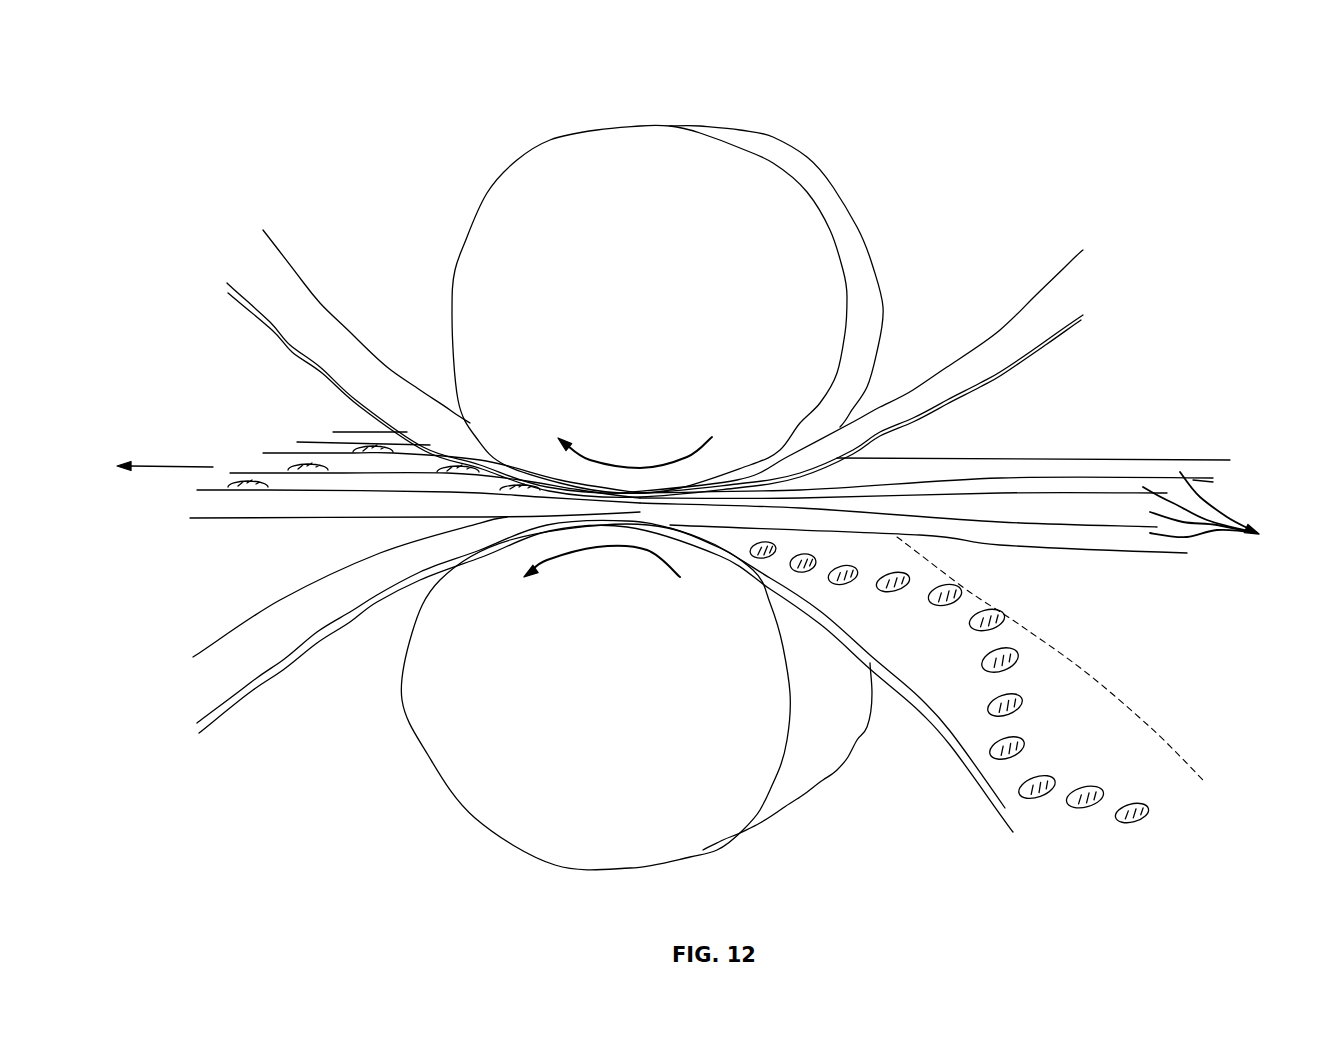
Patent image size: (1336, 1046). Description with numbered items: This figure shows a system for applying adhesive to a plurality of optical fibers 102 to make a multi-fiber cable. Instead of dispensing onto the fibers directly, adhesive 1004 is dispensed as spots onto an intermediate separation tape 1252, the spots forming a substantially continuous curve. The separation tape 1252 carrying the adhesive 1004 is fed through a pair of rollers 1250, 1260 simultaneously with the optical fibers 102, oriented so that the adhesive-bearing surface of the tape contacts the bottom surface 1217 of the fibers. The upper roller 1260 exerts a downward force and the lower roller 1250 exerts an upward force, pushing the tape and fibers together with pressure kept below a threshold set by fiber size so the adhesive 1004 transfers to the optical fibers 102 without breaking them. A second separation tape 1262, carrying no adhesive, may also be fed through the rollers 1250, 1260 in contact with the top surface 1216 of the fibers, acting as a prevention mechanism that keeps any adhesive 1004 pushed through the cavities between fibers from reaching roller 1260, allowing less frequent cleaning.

The roller 1260 is at (635, 158).
The second separation tape 1262 is at (290, 310).
The separation tape 1252 is at (257, 653).
The roller 1250 is at (495, 783).
The top surface 1216 is at (1057, 463).
The bottom surface 1217 is at (1067, 563).
The optical fibers 102 is at (1208, 515).
The adhesive 1004 is at (390, 450).